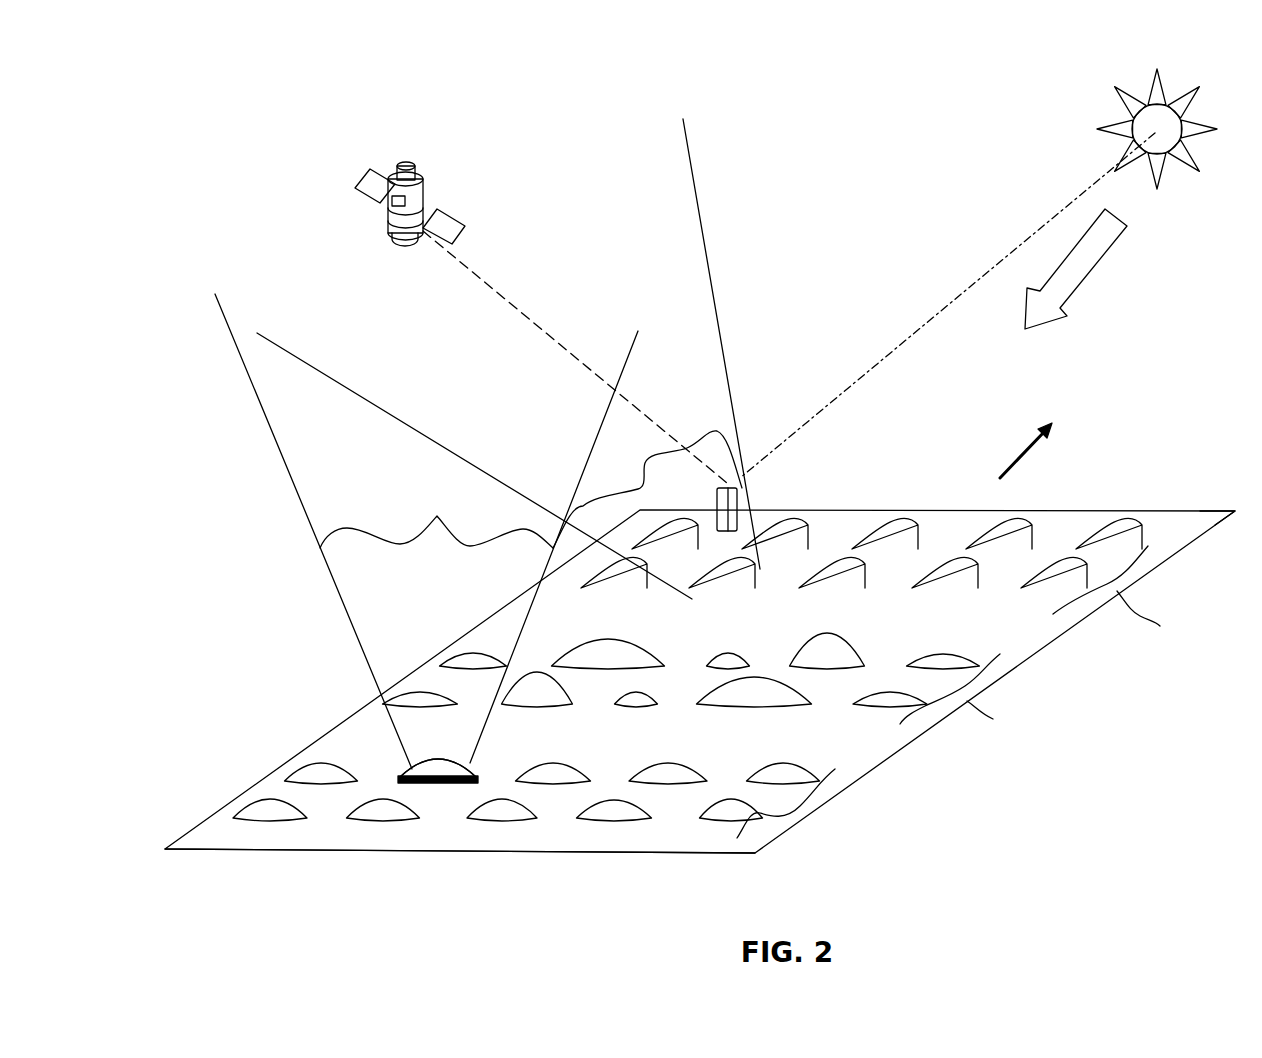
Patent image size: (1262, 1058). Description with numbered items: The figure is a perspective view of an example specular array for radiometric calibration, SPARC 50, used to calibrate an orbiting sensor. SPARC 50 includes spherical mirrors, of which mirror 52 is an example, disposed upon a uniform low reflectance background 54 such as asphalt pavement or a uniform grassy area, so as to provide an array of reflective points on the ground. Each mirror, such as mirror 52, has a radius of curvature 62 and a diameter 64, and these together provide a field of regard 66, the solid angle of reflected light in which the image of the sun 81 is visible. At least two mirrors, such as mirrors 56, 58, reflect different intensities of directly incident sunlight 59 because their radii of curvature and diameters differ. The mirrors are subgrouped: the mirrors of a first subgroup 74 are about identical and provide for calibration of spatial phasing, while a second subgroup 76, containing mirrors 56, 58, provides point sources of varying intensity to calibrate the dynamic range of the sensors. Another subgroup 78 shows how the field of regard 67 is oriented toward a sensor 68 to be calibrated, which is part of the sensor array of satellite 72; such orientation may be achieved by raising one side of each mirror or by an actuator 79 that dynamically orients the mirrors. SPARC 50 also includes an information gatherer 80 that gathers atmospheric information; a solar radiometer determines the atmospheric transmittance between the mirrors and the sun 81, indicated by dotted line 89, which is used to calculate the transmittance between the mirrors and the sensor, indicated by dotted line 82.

The SPARC system 50 is at (1045, 438).
The mirror 52 is at (429, 760).
The uniform low reflectance background 54 is at (700, 681).
The mirror 56 is at (857, 645).
The mirror 58 is at (938, 653).
The directly incident sunlight 59 is at (1063, 287).
The radius of curvature 62 is at (470, 772).
The diameter 64 is at (445, 783).
The field of regard 66 is at (426, 531).
The field of regard 67 is at (645, 462).
The sensor 68 is at (397, 215).
The satellite 72 is at (410, 178).
The first subgroup 74 is at (802, 804).
The second subgroup 76 is at (970, 689).
The subgroup 78 is at (1130, 587).
The actuator 79 is at (1153, 518).
The information gatherer 80 is at (738, 487).
The sun 81 is at (1168, 107).
The dotted line 82 is at (552, 345).
The dotted line 89 is at (910, 335).